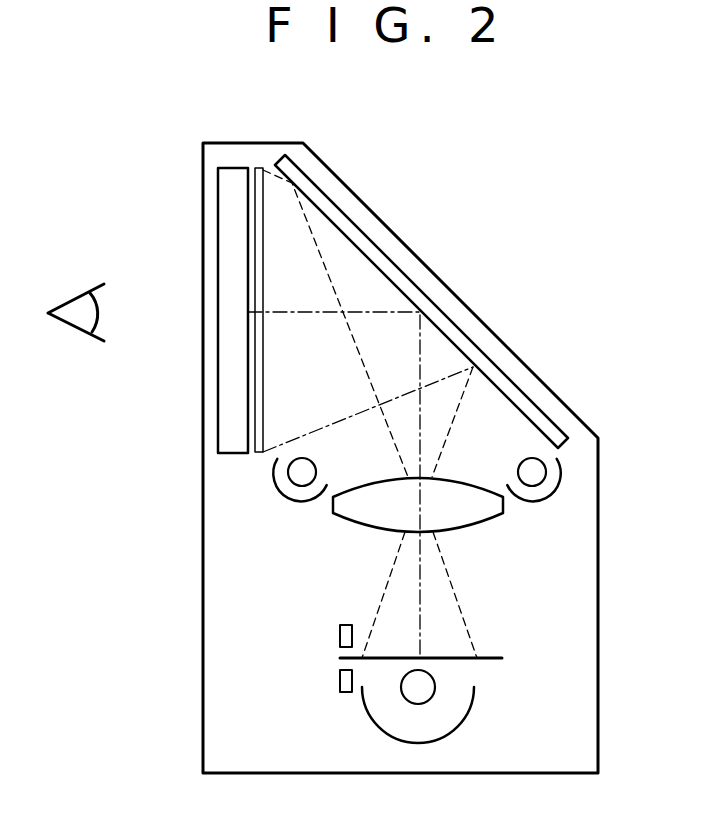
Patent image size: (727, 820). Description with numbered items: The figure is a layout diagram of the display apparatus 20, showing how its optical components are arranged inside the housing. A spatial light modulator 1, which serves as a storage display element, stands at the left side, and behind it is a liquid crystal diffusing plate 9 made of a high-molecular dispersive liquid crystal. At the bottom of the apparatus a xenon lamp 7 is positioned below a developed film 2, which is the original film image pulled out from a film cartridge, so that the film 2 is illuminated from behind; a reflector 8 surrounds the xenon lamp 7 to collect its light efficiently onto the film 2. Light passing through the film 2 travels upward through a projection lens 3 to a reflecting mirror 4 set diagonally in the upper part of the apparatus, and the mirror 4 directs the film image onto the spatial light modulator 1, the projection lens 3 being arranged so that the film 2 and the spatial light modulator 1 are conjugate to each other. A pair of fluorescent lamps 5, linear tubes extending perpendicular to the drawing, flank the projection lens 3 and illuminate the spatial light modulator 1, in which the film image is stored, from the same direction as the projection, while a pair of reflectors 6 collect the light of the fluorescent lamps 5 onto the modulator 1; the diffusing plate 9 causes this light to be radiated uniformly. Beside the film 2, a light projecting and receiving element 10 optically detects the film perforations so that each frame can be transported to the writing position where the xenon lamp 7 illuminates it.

The spatial light modulator 1 is at (230, 168).
The developed film 2 is at (495, 658).
The projection lens 3 is at (473, 518).
The reflecting mirror 4 is at (522, 400).
The fluorescent lamps 5 is at (289, 472).
The reflectors 6 is at (288, 502).
The xenon lamp 7 is at (405, 688).
The reflector 8 is at (467, 717).
The liquid crystal diffusing plate 9 is at (260, 168).
The light projecting and receiving element 10 is at (338, 680).
The display apparatus 20 is at (387, 226).